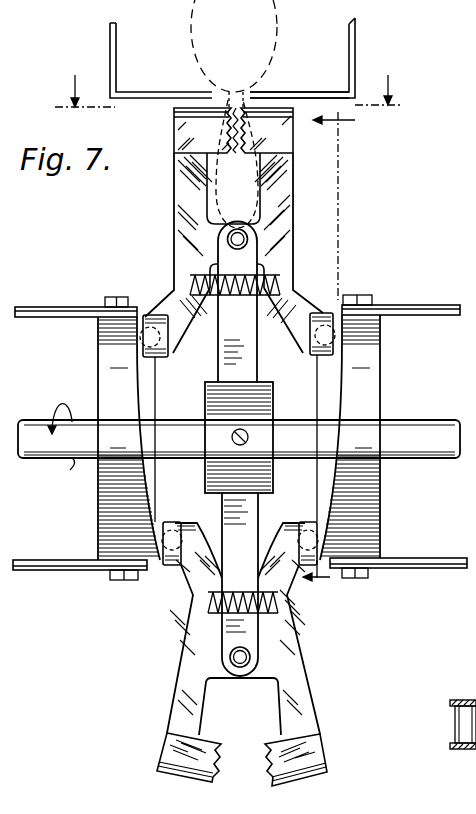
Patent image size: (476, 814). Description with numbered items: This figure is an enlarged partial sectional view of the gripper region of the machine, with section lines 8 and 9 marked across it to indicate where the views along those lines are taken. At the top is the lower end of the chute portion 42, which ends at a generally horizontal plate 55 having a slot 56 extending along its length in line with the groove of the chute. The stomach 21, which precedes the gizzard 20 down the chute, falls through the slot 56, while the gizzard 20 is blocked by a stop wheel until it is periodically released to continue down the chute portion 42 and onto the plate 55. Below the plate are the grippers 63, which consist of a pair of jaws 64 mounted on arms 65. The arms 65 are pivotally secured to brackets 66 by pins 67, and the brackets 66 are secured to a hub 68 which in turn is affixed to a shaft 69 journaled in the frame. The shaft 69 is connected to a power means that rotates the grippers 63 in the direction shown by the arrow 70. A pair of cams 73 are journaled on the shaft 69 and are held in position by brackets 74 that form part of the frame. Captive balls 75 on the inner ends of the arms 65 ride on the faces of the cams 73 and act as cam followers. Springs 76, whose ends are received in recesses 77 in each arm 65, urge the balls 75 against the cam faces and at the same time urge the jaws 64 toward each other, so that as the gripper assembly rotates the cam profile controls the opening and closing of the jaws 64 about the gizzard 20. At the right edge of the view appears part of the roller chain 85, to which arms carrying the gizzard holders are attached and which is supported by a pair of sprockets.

The section line 8- 8 is at (329, 349).
The section line 9- 9 is at (228, 80).
The gizzard 20 is at (192, 41).
The stomach 21 is at (248, 185).
The chute portion 42 is at (356, 44).
The horizontal plate 55 is at (322, 92).
The slot 56 is at (249, 92).
The grippers 63 is at (174, 197).
The jaws 64 is at (331, 752).
The arms 65 is at (192, 224).
The brackets 66 is at (257, 358).
The pins 67 is at (233, 242).
The hub 68 is at (272, 412).
The shaft 69 is at (434, 420).
The arrow 70 is at (63, 419).
The cams 73 is at (380, 365).
The brackets 74 is at (412, 305).
The captive balls 75 is at (322, 325).
The springs 76 is at (214, 305).
The recesses 77 is at (192, 285).
The roller chain 85 is at (452, 700).